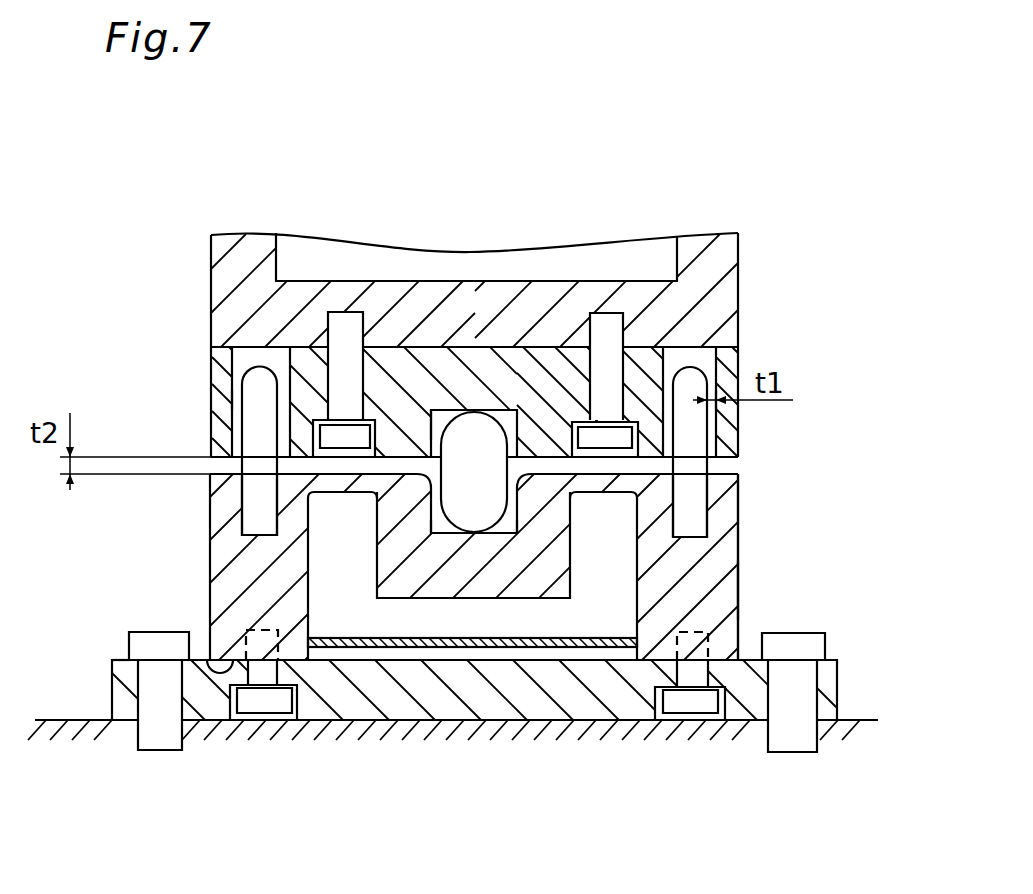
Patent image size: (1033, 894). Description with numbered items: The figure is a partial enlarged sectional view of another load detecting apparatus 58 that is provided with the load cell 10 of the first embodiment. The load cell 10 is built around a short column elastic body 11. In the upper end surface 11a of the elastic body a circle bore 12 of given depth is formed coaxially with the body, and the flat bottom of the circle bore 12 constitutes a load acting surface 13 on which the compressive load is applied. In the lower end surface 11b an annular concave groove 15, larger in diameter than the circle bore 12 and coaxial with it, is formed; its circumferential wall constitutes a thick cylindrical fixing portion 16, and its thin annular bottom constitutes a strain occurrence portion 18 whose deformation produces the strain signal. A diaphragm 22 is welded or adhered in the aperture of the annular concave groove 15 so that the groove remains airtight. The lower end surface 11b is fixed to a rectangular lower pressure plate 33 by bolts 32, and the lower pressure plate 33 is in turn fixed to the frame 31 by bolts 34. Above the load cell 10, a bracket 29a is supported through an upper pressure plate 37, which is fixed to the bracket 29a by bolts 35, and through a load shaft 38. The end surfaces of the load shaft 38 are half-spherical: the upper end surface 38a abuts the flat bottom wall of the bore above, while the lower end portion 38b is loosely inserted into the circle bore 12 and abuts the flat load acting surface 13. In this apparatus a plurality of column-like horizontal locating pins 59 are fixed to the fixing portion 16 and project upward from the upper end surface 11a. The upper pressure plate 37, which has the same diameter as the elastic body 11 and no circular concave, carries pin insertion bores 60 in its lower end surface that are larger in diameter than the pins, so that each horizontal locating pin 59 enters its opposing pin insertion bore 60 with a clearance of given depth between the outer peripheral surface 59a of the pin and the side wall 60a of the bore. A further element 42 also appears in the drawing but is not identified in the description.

The load cell 10 is at (741, 586).
The short column elastic body 11 is at (212, 538).
The upper end surface 11a is at (215, 465).
The lower end surface 11b is at (208, 660).
The circle bore 12 is at (433, 497).
The load acting surface 13 is at (440, 525).
The annular concave groove 15 is at (612, 598).
The fixing portion 16 is at (718, 507).
The strain occurrence portion 18 is at (617, 490).
The diaphragm 22 is at (405, 643).
The bracket 29a is at (215, 262).
The frame 31 is at (84, 728).
The bolts 32 is at (263, 707).
The lower pressure plate 33 is at (122, 672).
The bolts 34 is at (134, 648).
The bolts 35 is at (340, 333).
The upper pressure plate 37 is at (735, 377).
The load shaft 38 is at (510, 440).
The upper end surface of load shaft 38a is at (497, 442).
The lower end portion of load shaft 38b is at (505, 535).
The contact portion 42 is at (433, 433).
The load detecting apparatus 58 is at (777, 237).
The horizontal locating pins 59 is at (250, 445).
The outer peripheral surface 59a is at (253, 500).
The pin insertion bores 60 is at (245, 362).
The side wall of pin insertion bore 60a is at (233, 400).